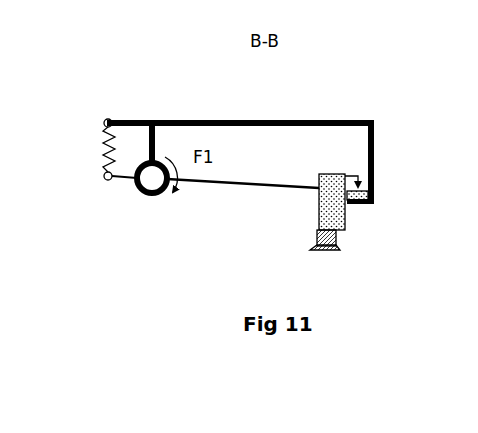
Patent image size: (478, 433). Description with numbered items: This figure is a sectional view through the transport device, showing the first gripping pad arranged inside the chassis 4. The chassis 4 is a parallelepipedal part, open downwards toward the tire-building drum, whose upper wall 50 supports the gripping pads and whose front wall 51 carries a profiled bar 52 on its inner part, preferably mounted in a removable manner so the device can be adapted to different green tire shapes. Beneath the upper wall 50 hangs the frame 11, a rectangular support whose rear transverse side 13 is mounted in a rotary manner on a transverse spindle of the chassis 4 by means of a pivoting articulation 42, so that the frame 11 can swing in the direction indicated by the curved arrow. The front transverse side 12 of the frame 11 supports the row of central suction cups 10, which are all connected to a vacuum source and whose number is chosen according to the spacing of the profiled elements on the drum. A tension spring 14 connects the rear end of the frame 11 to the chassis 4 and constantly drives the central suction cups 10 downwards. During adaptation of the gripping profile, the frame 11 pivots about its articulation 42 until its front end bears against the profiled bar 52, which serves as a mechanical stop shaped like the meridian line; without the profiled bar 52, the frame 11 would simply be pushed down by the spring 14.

The chassis 4 is at (276, 117).
The upper wall 50 is at (205, 118).
The front wall 51 is at (375, 152).
The pivoting articulation 42 is at (140, 192).
The tension spring 14 is at (100, 152).
The rear transverse side 13 is at (121, 177).
The frame 11 is at (208, 185).
The front transverse side 12 is at (318, 192).
The central suction cup 10 is at (336, 228).
The profiled bar 52 is at (357, 205).